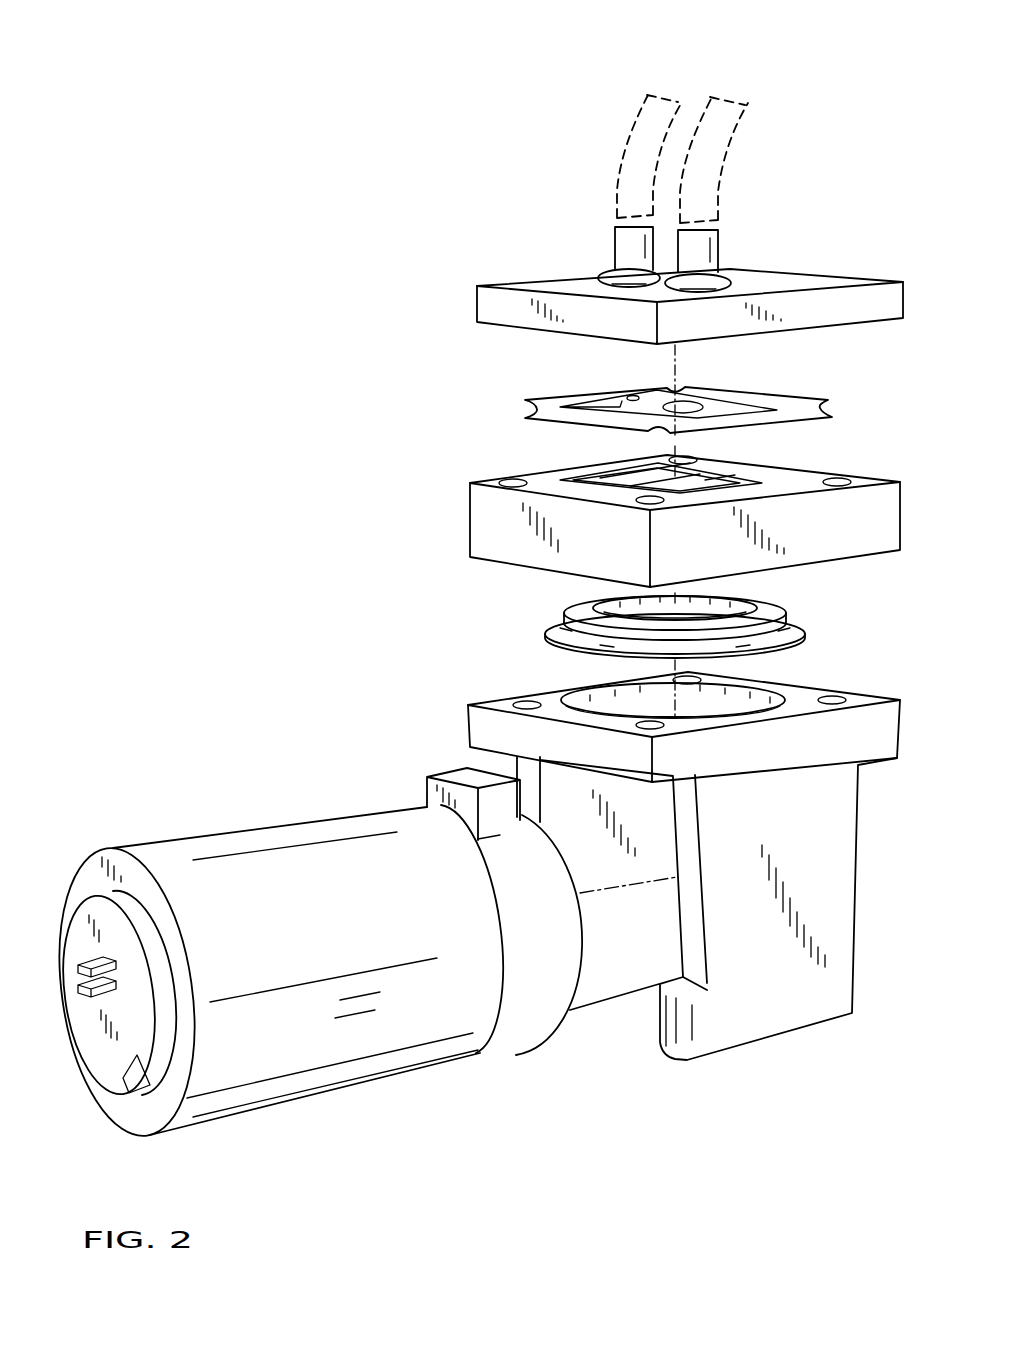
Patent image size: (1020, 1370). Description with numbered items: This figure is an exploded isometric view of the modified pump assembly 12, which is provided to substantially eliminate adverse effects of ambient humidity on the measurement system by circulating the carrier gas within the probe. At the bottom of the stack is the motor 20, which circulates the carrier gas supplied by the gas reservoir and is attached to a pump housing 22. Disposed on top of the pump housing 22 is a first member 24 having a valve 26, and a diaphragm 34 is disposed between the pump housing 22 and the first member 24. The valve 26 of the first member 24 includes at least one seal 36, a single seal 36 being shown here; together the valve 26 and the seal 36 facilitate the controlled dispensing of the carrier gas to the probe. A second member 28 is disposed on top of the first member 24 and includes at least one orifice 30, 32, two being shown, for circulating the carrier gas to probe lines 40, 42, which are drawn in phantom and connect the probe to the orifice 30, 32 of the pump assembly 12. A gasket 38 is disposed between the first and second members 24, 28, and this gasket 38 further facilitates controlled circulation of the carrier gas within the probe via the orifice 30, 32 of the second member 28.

The pump assembly 12 is at (472, 618).
The motor 20 is at (278, 812).
The pump housing 22 is at (747, 1007).
The first member 24 is at (755, 468).
The valve 26 is at (610, 502).
The second member 28 is at (653, 217).
The orifice 30 is at (617, 247).
The orifice 32 is at (718, 253).
The diaphragm 34 is at (543, 635).
The seal 36 is at (620, 473).
The gasket 38 is at (530, 397).
The probe line 40 is at (623, 145).
The probe line 42 is at (715, 160).